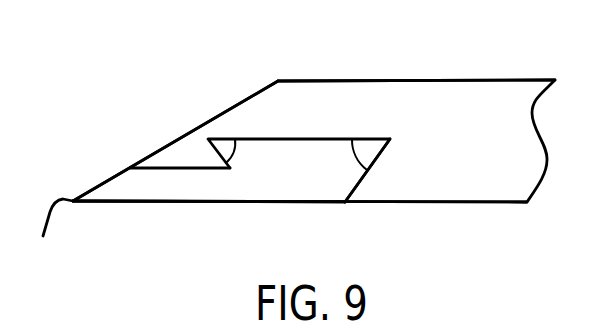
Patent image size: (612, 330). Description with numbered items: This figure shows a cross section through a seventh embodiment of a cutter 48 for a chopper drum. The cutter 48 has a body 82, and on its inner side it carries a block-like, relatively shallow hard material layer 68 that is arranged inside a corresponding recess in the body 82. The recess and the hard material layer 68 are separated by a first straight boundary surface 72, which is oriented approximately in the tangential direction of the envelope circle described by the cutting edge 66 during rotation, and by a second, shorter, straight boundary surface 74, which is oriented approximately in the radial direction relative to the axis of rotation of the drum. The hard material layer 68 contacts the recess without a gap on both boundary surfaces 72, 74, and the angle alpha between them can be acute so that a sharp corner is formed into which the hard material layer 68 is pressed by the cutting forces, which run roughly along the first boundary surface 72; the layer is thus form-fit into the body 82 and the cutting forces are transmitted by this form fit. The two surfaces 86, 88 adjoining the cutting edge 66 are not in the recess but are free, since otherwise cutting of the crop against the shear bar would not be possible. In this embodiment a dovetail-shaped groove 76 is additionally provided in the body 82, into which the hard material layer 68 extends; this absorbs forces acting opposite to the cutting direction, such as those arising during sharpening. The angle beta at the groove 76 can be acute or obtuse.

The cutter 48 is at (492, 61).
The body 82 is at (393, 95).
The dovetail-shaped groove 76 is at (286, 148).
The surface adjoining the cutting edge 88 is at (102, 182).
The first straight boundary surface 72 is at (303, 139).
The second boundary surface 74 is at (362, 170).
The surface adjoining the cutting edge 86 is at (280, 203).
The hard material layer 68 is at (195, 187).
The cutting edge 66 is at (50, 236).